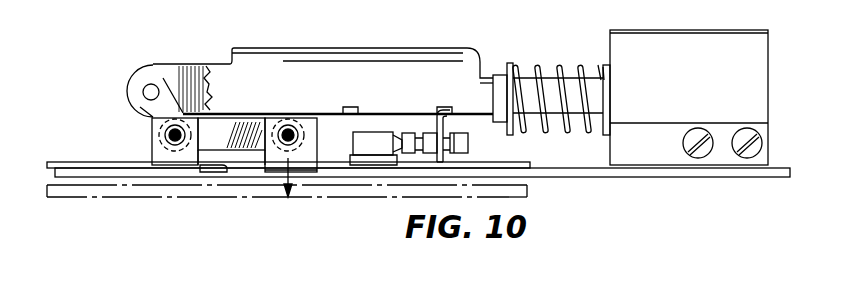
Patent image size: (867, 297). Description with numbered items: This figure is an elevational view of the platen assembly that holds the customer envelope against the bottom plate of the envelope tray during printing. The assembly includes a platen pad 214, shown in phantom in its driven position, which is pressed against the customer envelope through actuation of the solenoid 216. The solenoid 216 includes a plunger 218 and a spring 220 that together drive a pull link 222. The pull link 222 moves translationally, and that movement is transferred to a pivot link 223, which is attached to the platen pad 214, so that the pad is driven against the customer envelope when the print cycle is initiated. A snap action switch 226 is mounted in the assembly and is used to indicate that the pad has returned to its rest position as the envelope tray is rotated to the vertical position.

The platen pad 214 is at (225, 177).
The solenoid 216 is at (702, 82).
The plunger 218 is at (531, 63).
The spring 220 is at (530, 88).
The pull link 222 is at (287, 32).
The pivot link 223 is at (142, 160).
The snap action switch 226 is at (375, 140).